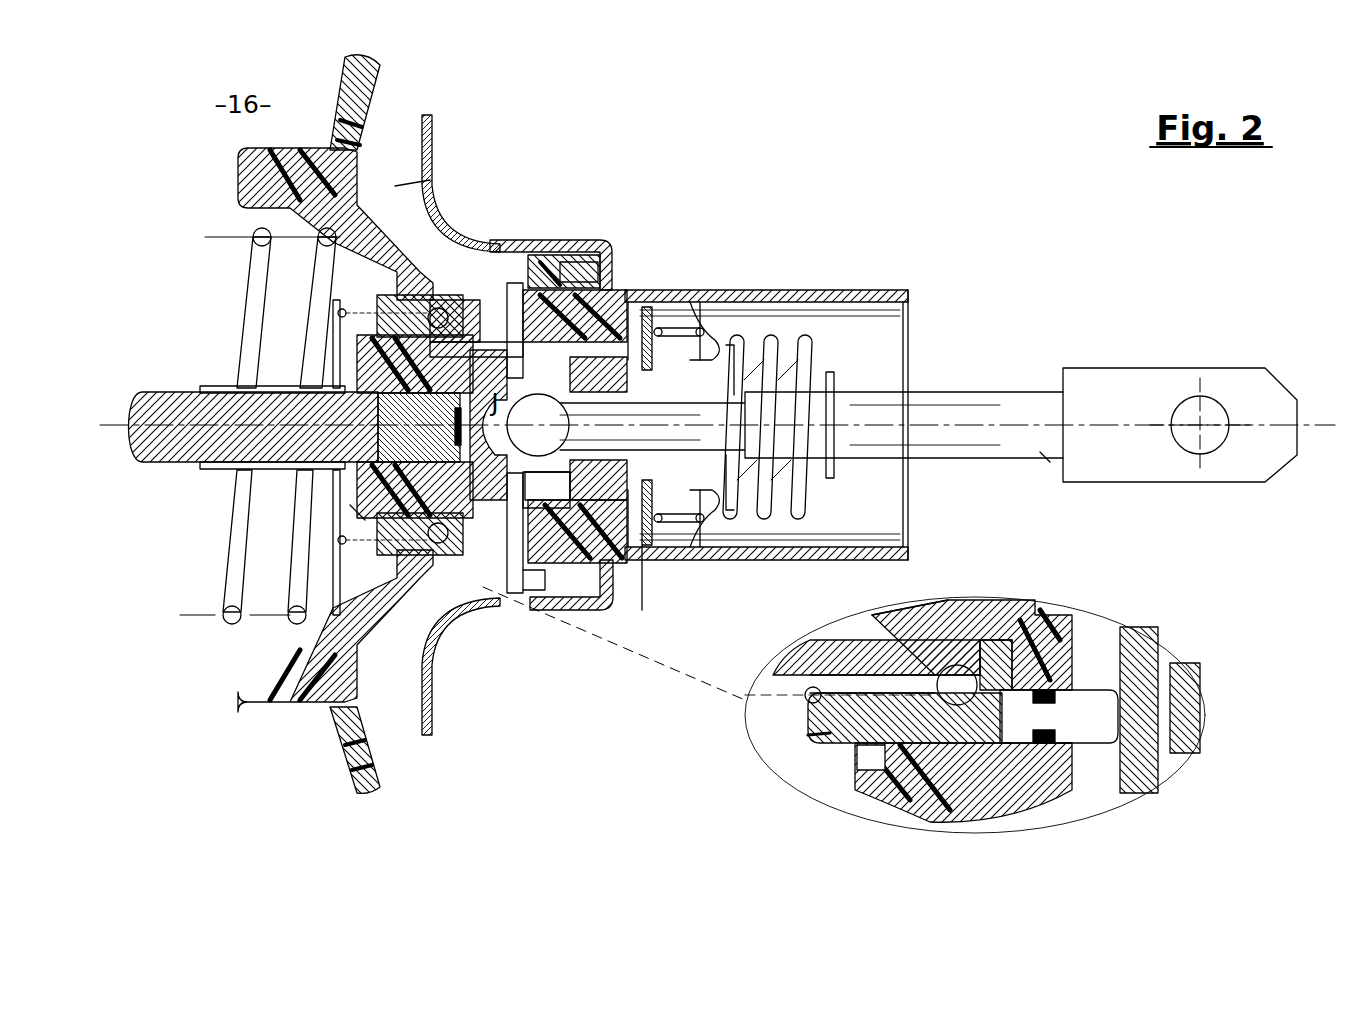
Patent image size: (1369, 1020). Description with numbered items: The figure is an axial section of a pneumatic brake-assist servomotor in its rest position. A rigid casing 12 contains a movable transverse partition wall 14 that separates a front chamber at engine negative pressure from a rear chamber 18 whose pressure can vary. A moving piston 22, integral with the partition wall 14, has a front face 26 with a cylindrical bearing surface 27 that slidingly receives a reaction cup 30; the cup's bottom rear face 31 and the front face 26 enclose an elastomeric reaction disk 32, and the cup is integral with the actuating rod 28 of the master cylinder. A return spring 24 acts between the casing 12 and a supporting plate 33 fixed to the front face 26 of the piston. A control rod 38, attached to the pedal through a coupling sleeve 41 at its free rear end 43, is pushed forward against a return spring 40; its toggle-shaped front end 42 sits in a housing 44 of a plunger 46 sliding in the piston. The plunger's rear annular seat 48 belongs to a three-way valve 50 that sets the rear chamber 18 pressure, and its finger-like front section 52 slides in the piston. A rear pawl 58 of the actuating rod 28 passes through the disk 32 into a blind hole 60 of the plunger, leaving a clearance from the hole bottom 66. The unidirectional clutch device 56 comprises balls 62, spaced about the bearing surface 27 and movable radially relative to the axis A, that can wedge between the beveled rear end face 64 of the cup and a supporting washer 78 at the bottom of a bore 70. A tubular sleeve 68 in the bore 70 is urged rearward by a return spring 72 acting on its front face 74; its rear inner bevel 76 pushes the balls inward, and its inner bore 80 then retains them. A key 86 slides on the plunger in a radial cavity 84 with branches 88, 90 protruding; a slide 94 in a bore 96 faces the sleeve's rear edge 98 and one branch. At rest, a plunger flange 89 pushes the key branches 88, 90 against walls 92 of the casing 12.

The rigid casing 12 is at (433, 137).
The transverse partition wall 14 is at (375, 97).
The rear chamber 18 is at (430, 180).
The moving piston 22 is at (238, 182).
The return spring 24 is at (243, 478).
The front face of the moving piston 26 is at (350, 275).
The cylindrical bearing surface 27 is at (435, 560).
The actuating rod 28 is at (155, 393).
The reaction cup 30 is at (347, 563).
The bottom rear face of the cup 31 is at (383, 477).
The reaction disk 32 is at (372, 347).
The supporting plate 33 is at (340, 600).
The control rod 38 is at (1040, 452).
The return spring 40 is at (787, 510).
The coupling sleeve 41 is at (1238, 378).
The front end of the control rod 42 is at (548, 410).
The free rear end of the control rod 43 is at (1030, 395).
The housing 44 is at (690, 340).
The plunger 46 is at (605, 355).
The rear annular seat 48 is at (685, 508).
The three-way valve 50 is at (640, 530).
The front free end section 52 is at (357, 513).
The unidirectional clutch device 56 is at (443, 252).
The rear pawl 58 is at (320, 410).
The blind axial hole 60 is at (385, 417).
The balls 62 is at (430, 280).
The rear end face of the cup 64 is at (375, 313).
The bottom of the blind axial hole 66 is at (550, 615).
The tubular sleeve 68 is at (810, 727).
The bore 70 is at (873, 773).
The return spring 72 is at (805, 693).
The front face of the sleeve 74 is at (815, 735).
The rear inner bevel 76 is at (818, 731).
The supporting washer 78 is at (963, 675).
The inner bore of the sleeve 80 is at (863, 687).
The cavity 84 is at (550, 535).
The key 86 is at (512, 600).
The branch of the key 88 is at (518, 597).
The flange of the plunger 89 is at (565, 345).
The branch of the key 90 is at (515, 292).
The walls of the casing 92 is at (548, 270).
The slide 94 is at (450, 548).
The bore 96 is at (1072, 732).
The rear edge of the sleeve 98 is at (1012, 730).
The axis A is at (1330, 425).